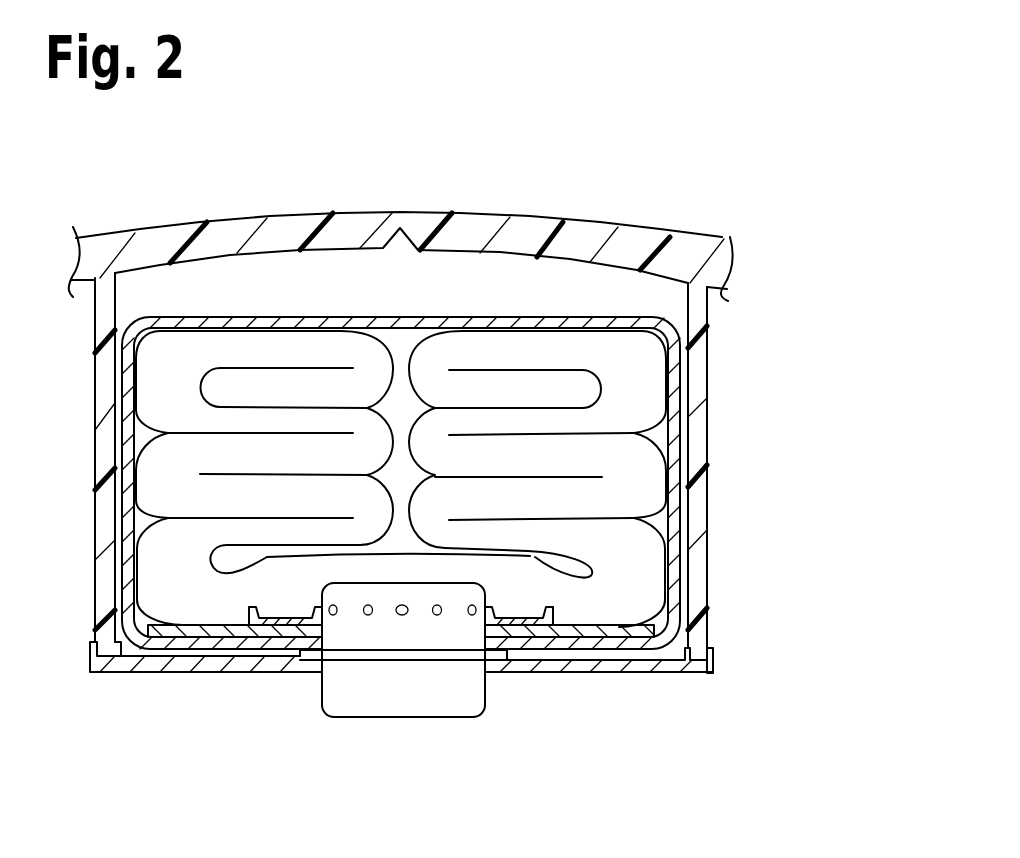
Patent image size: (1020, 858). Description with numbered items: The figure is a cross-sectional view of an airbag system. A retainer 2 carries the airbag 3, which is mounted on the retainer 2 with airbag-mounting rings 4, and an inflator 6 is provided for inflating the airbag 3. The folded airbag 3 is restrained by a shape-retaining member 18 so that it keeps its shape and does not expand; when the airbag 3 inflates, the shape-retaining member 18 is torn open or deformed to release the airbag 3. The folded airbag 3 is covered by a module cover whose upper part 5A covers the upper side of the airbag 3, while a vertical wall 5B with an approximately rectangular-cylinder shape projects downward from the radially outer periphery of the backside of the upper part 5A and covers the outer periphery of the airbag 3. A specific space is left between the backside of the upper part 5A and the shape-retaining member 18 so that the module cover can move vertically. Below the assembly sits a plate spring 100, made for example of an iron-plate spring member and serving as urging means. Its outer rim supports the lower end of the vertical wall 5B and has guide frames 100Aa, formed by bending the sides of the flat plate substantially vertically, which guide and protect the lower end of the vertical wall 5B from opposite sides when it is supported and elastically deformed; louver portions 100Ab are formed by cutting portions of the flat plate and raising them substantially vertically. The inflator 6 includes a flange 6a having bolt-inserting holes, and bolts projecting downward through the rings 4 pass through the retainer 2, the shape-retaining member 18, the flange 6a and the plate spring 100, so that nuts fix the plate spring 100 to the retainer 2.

The retainer 2 is at (607, 633).
The airbag 3 is at (530, 342).
The airbag-mounting ring 4 is at (253, 607).
The upper part 5A is at (183, 226).
The vertical wall 5B is at (95, 523).
The inflator 6 is at (392, 705).
The flange 6a is at (500, 660).
The shape-retaining member 18 is at (317, 326).
The plate spring 100 is at (186, 685).
The guide frame 100Aa is at (713, 653).
The louver portion 100Ab is at (667, 672).